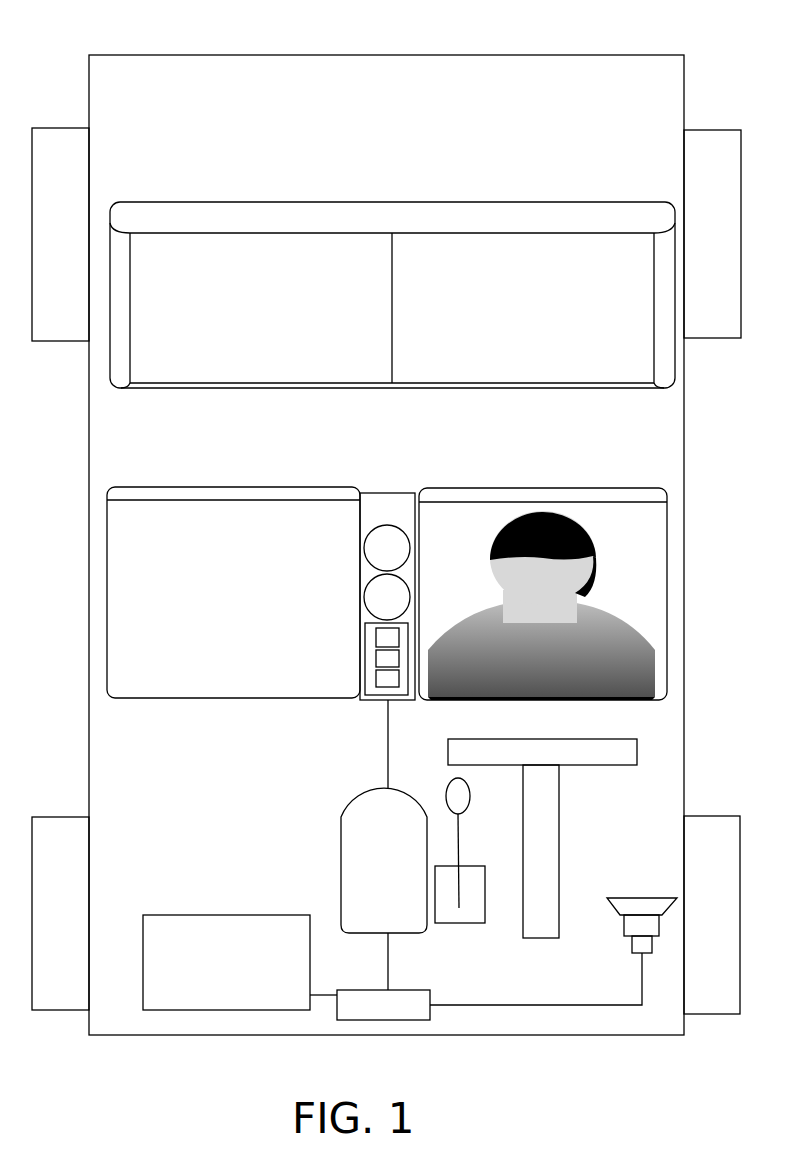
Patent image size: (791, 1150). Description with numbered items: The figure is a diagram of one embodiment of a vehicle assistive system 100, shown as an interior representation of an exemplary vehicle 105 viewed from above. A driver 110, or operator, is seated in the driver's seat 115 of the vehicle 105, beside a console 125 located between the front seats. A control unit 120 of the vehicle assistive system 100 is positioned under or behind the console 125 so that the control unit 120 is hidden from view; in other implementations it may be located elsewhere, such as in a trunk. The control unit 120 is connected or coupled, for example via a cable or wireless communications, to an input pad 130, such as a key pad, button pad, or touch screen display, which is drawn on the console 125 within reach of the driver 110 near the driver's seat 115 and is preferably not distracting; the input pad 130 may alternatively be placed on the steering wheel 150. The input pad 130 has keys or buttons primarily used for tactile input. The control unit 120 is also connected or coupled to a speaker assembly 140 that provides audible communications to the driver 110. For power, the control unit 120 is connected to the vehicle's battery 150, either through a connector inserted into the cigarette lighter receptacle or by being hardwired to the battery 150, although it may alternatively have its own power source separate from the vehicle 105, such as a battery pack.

The vehicle assistive system 100 is at (386, 523).
The vehicle 105 is at (598, 55).
The driver 110 is at (585, 537).
The driver's seat 115 is at (452, 488).
The control unit 120 is at (408, 988).
The console 125 is at (400, 866).
The input pad 130 is at (375, 685).
The speaker assembly 140 is at (650, 895).
The steering wheel / vehicle battery 150 is at (187, 1001).